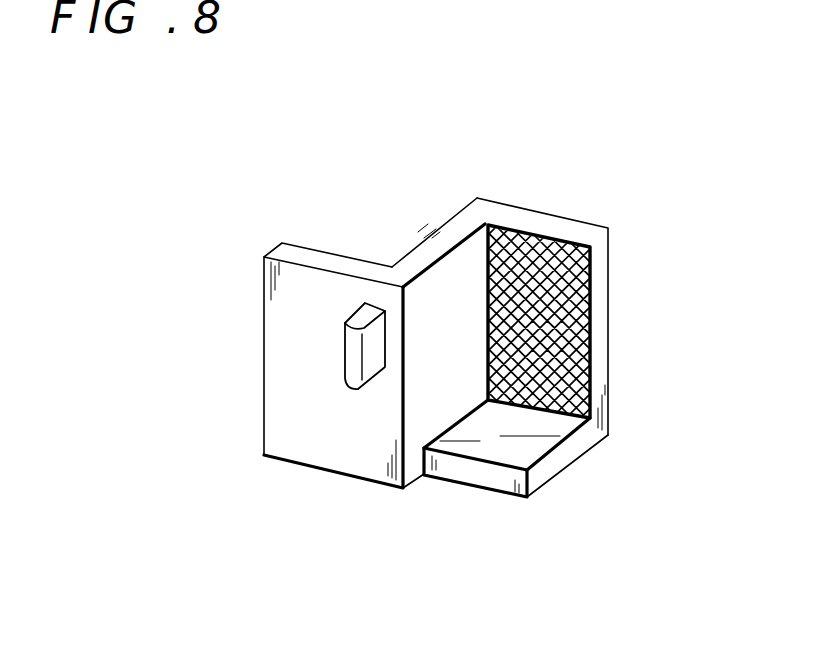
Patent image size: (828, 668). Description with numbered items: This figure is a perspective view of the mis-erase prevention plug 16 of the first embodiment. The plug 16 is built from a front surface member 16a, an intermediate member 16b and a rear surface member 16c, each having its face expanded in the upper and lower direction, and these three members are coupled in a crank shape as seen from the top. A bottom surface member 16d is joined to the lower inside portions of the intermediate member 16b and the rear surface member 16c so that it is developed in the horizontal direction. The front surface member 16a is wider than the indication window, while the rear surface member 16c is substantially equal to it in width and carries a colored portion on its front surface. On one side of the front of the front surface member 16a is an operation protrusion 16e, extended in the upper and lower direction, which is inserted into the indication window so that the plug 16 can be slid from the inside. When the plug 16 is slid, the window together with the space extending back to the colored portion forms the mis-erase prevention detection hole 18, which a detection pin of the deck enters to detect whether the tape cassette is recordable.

The mis-erase prevention plug 16 is at (331, 221).
The front surface member 16a is at (263, 335).
The intermediate member 16b is at (442, 227).
The rear surface member 16c is at (558, 212).
The bottom surface member 16d is at (571, 461).
The operation protrusion 16e is at (356, 360).
The mis-erase prevention detection hole 18 is at (584, 326).